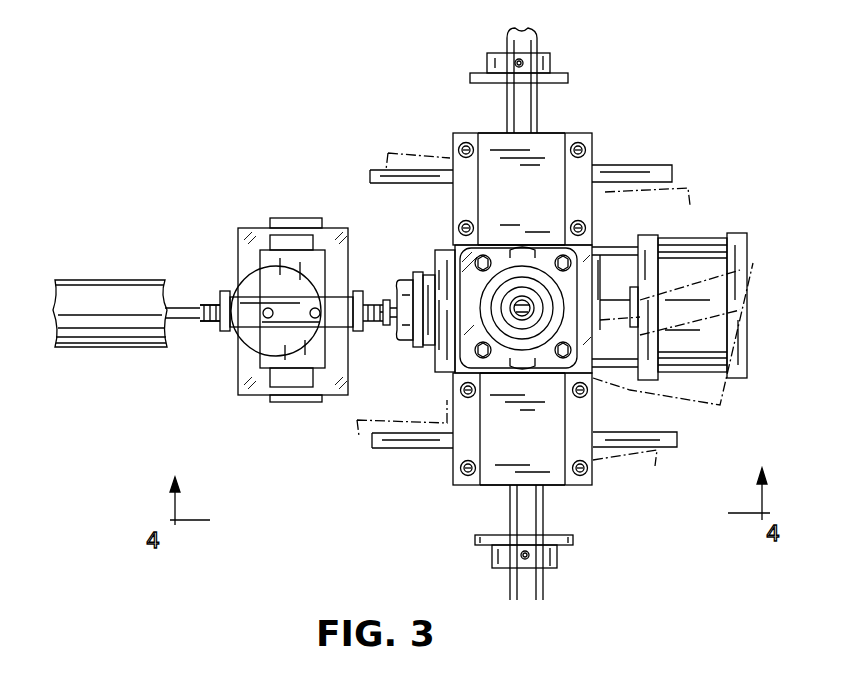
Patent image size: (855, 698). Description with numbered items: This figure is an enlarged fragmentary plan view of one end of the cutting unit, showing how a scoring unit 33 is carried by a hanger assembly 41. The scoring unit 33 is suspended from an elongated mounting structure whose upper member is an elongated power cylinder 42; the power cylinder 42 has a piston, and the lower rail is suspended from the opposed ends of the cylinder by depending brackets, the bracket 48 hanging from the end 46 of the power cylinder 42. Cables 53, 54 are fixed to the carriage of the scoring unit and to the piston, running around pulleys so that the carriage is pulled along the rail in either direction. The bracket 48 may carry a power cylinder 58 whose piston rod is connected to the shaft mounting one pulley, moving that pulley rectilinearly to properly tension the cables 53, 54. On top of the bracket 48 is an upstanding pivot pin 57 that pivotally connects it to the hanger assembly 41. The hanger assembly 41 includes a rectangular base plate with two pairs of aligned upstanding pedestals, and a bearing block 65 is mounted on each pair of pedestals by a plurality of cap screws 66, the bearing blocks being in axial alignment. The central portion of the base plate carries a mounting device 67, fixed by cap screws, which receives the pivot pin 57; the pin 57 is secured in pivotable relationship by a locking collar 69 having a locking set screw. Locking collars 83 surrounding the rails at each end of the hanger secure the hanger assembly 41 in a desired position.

The scoring unit 33 is at (246, 228).
The hanger assembly 41 is at (553, 133).
The power cylinder 42 is at (75, 290).
The end of the power cylinder 46 is at (405, 290).
The bracket 48 is at (446, 262).
The cable 53 is at (178, 308).
The cable 54 is at (388, 322).
The pivot pin 57 is at (533, 300).
The power cylinder 58 is at (740, 243).
The bearing block 65 is at (497, 146).
The cap screws 66 is at (458, 148).
The mounting device 67 is at (538, 378).
The locking collar 69 is at (510, 293).
The locking collars 83 is at (550, 56).